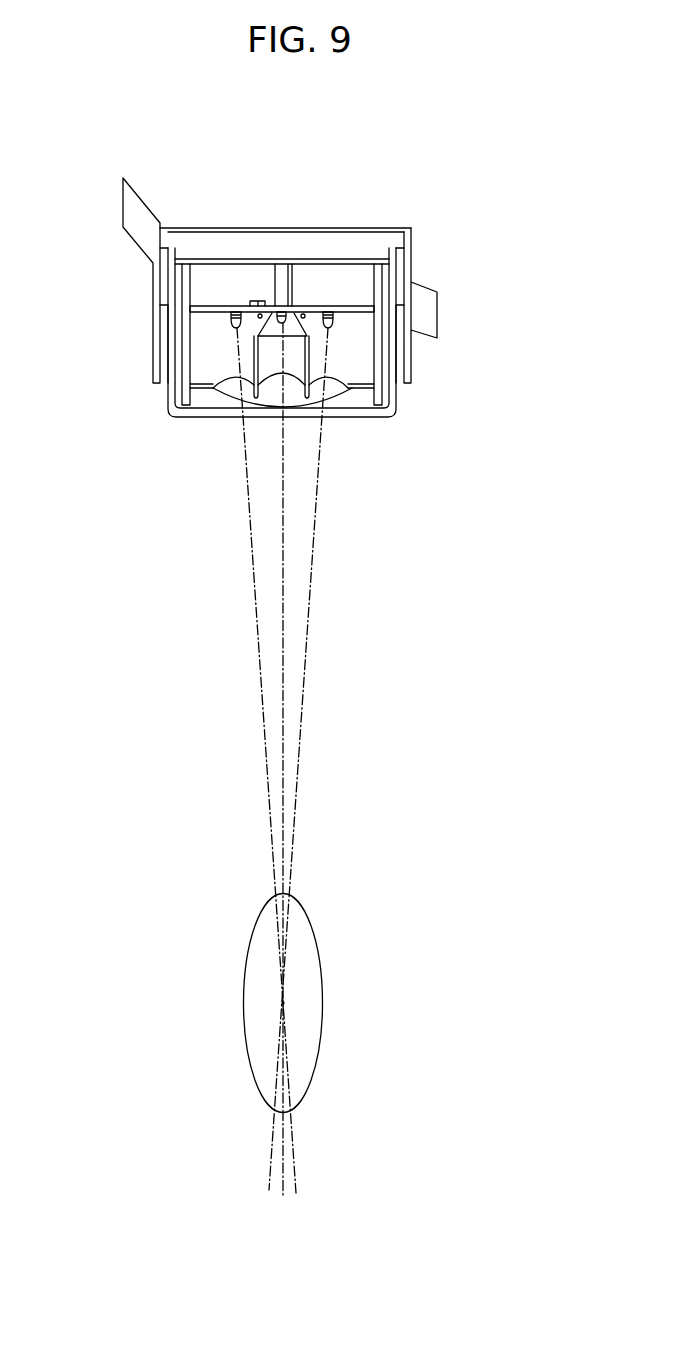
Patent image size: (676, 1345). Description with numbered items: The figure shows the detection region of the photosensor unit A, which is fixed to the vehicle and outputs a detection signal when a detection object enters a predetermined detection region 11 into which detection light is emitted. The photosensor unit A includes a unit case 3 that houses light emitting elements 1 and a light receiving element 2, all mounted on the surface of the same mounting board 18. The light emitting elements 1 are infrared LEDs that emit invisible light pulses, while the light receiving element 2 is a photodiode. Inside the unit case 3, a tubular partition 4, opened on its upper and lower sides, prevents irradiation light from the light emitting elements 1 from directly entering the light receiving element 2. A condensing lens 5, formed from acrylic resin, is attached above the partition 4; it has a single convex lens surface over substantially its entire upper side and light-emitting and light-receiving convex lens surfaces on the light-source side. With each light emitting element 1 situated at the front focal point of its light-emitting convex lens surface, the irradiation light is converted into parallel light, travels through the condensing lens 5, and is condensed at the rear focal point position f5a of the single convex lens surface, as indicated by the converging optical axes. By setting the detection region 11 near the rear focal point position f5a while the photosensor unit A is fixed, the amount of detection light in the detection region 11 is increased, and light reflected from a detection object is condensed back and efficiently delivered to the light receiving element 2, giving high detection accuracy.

The light emitting element 1 is at (235, 327).
The light receiving element 2 is at (284, 312).
The unit case 3 is at (150, 290).
The partition 4 is at (250, 365).
The condensing lens 5 is at (335, 390).
The mounting board 18 is at (205, 306).
The detection region 11 is at (303, 937).
The rear focal point position f5a is at (282, 1013).
The photosensor unit A is at (483, 314).